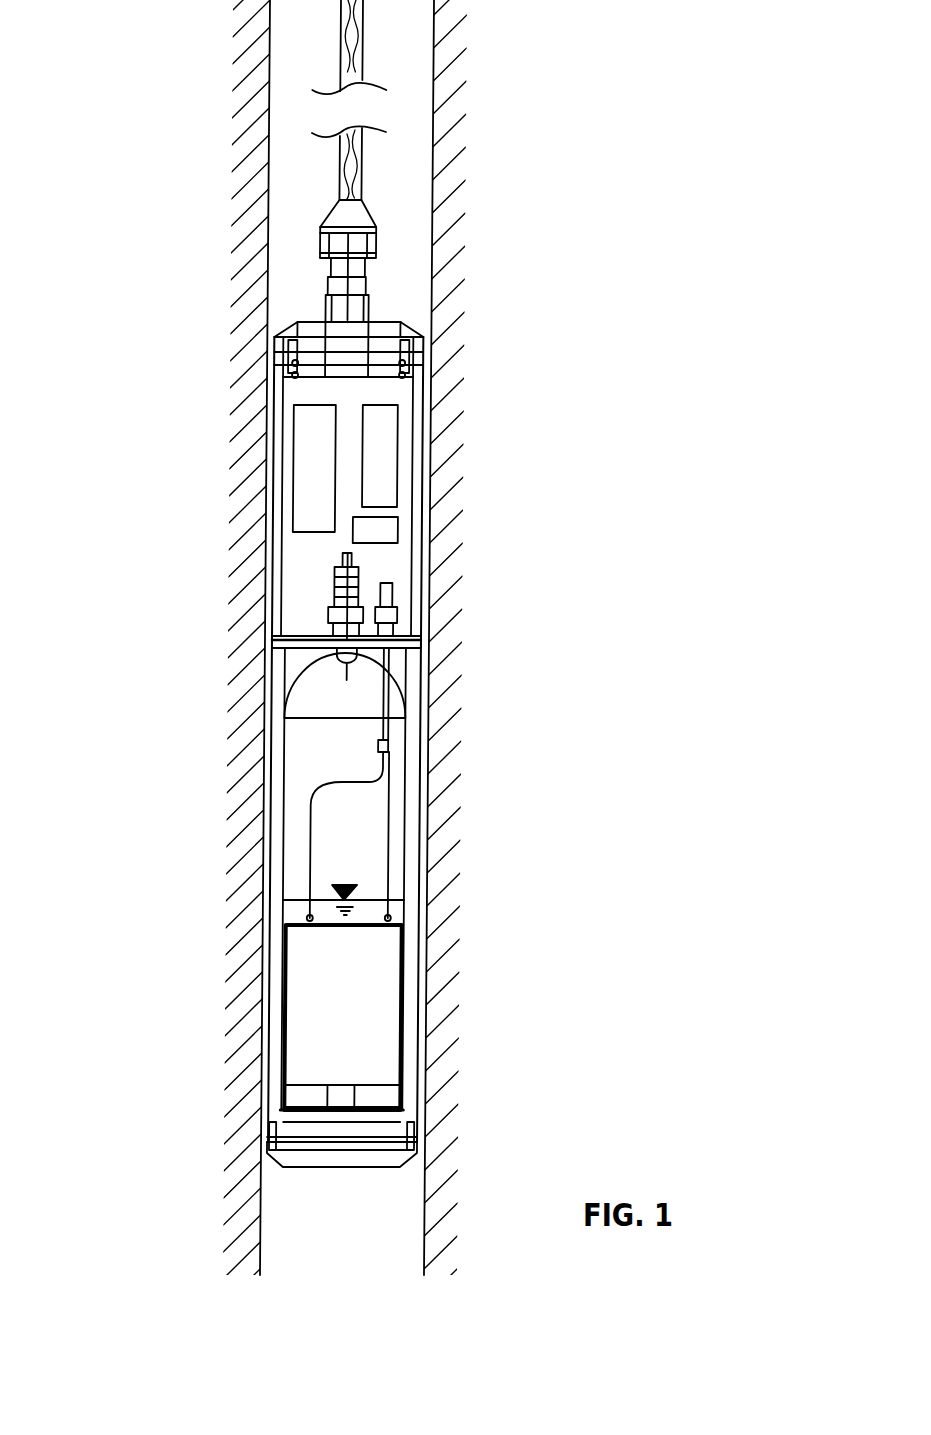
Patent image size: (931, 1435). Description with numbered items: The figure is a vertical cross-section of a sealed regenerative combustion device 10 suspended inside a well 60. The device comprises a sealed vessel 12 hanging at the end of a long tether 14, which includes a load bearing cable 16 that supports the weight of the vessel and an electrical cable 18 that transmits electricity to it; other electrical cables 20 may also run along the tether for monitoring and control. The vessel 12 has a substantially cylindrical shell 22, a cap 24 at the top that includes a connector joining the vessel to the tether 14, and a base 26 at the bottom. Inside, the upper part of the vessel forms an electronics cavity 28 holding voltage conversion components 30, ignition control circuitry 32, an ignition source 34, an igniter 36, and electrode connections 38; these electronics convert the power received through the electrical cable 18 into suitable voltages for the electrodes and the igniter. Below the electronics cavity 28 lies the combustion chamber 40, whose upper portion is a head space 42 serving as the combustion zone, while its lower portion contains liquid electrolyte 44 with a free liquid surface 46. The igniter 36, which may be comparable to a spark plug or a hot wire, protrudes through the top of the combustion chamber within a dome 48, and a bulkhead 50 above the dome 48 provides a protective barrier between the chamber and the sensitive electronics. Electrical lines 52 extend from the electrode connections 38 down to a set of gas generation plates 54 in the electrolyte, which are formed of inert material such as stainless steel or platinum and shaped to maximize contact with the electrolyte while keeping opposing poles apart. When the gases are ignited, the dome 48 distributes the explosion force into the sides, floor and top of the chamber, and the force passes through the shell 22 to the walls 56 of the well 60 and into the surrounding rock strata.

The regenerative combustion device 10 is at (190, 622).
The sealed vessel 12 is at (258, 537).
The tether 14 is at (388, 146).
The load bearing cable 16 is at (363, 43).
The electrical cable 18 is at (363, 83).
The other electrical cables 20 is at (340, 138).
The cylindrical shell 22 is at (280, 425).
The cap 24 is at (382, 323).
The base 26 is at (363, 1145).
The electronics cavity 28 is at (410, 390).
The voltage conversion components 30 is at (388, 457).
The ignition control circuitry 32 is at (382, 530).
The ignition source 34 is at (302, 477).
The igniter 36 is at (350, 582).
The electrode connections 38 is at (395, 612).
The combustion chamber 40 is at (357, 744).
The head space 42 is at (323, 745).
The liquid electrolyte 44 is at (297, 912).
The free liquid surface 46 is at (297, 895).
The dome 48 is at (317, 695).
The bulkhead 50 is at (420, 640).
The electrical lines 52 is at (312, 828).
The gas generation plates 54 is at (365, 1000).
The walls of the well 56 is at (250, 312).
The well 60 is at (300, 207).